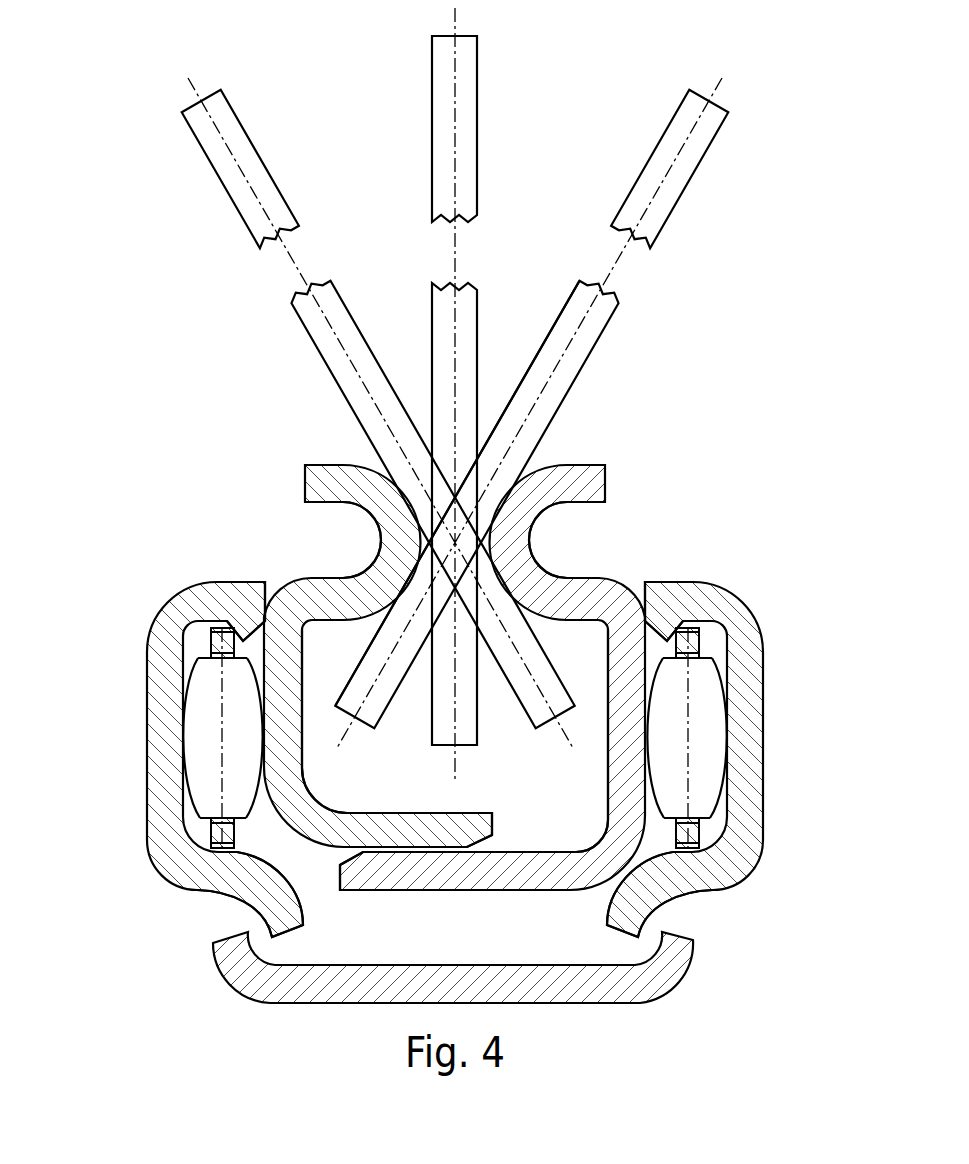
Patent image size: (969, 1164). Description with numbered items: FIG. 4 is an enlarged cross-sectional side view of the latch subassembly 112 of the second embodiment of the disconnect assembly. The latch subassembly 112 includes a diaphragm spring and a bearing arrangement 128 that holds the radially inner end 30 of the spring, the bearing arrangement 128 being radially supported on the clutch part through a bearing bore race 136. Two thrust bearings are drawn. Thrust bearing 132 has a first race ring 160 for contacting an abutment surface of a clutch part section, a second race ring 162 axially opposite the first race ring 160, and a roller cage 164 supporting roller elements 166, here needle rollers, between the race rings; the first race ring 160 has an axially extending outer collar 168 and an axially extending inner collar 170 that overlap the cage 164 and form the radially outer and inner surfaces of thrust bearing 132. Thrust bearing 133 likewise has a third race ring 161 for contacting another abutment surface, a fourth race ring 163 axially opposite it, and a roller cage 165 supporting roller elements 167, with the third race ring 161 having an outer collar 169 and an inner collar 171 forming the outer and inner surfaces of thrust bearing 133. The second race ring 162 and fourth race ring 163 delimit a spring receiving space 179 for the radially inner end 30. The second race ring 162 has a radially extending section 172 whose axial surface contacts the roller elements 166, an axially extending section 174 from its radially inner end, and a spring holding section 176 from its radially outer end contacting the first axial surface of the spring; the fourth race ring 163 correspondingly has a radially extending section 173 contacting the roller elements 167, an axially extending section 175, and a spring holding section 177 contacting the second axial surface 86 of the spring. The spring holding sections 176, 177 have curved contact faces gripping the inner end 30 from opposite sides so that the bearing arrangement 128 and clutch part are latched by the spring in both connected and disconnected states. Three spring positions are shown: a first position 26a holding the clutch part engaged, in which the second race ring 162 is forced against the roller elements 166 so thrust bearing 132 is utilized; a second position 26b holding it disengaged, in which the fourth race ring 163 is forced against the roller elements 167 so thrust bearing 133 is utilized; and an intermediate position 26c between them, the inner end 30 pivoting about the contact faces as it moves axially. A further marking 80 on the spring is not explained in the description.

The latch subassembly 112 is at (440, 395).
The first position 26a is at (228, 178).
The second position 26b is at (680, 185).
The third intermediate position 26c is at (467, 127).
The guide rod 80 is at (565, 383).
The second axial surface 86 is at (547, 350).
The radially inner end 30 is at (447, 688).
The thrust bearing 133 is at (274, 672).
The thrust bearing 132 is at (601, 685).
The bearing arrangement 128 is at (436, 988).
The bearing bore race 136 is at (690, 940).
The third race ring 161 is at (167, 607).
The first race ring 160 is at (740, 605).
The fourth race ring 163 is at (312, 463).
The second race ring 162 is at (600, 463).
The axially extending outer collar 169 is at (233, 588).
The axially extending outer collar 168 is at (667, 588).
The spring holding section 177 is at (387, 528).
The spring holding section 176 is at (522, 528).
The roller cage 165 is at (207, 624).
The roller cage 164 is at (690, 640).
The roller elements 167 is at (198, 735).
The roller elements 166 is at (712, 728).
The radially extending section 173 is at (290, 733).
The radially extending section 172 is at (600, 733).
The spring receiving space 179 is at (460, 811).
The axially extending inner collar 171 is at (237, 873).
The axially extending inner collar 170 is at (670, 872).
The axially extending section 175 is at (415, 838).
The axially extending section 174 is at (523, 880).